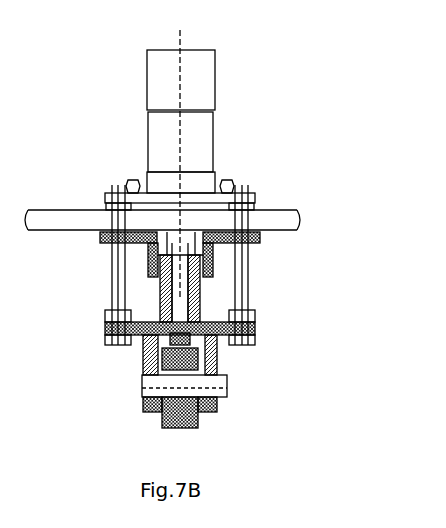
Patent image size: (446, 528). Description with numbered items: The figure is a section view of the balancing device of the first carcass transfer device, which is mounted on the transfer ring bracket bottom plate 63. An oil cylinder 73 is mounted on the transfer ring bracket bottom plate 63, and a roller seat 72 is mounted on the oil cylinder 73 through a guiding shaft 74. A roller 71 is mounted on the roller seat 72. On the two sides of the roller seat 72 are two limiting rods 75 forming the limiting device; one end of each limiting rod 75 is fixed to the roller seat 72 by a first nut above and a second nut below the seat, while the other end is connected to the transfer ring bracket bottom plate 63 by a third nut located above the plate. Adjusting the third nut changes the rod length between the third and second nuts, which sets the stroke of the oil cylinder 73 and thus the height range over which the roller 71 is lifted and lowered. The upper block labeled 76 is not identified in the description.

The transfer ring bracket bottom plate 63 is at (175, 204).
The roller 71 is at (232, 427).
The roller seat 72 is at (141, 332).
The oil cylinder 73 is at (236, 125).
The guiding shaft 74 is at (233, 370).
The limiting rod 75 is at (176, 265).
The top block 76 is at (223, 55).